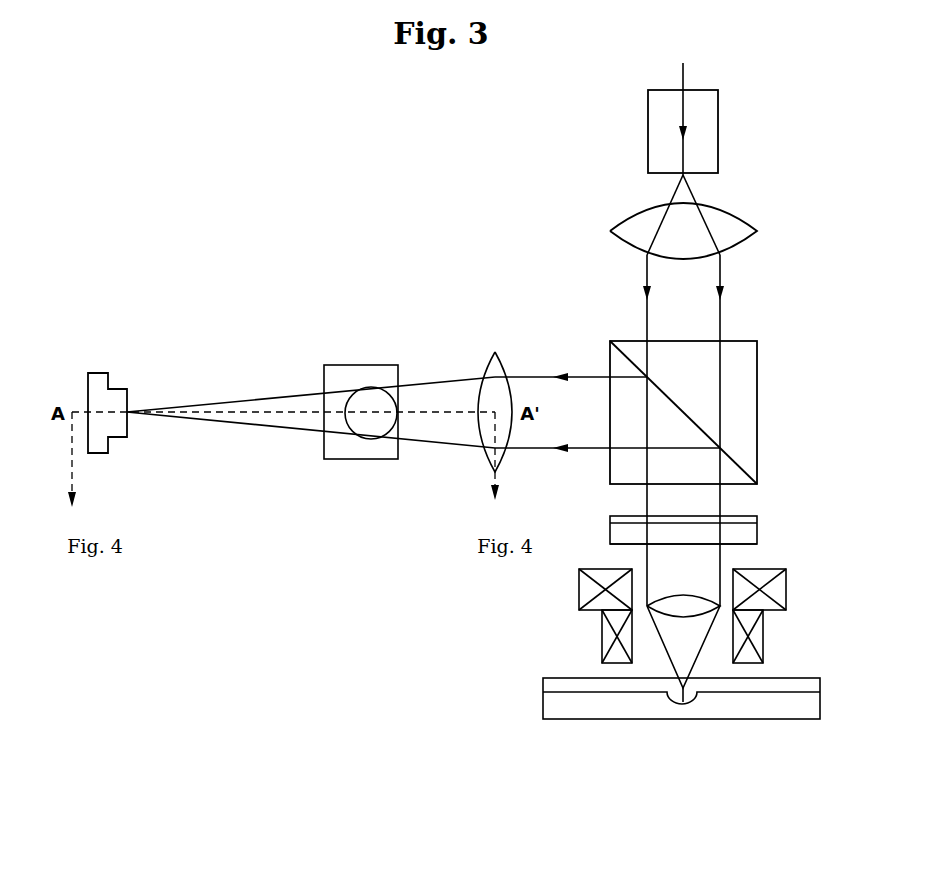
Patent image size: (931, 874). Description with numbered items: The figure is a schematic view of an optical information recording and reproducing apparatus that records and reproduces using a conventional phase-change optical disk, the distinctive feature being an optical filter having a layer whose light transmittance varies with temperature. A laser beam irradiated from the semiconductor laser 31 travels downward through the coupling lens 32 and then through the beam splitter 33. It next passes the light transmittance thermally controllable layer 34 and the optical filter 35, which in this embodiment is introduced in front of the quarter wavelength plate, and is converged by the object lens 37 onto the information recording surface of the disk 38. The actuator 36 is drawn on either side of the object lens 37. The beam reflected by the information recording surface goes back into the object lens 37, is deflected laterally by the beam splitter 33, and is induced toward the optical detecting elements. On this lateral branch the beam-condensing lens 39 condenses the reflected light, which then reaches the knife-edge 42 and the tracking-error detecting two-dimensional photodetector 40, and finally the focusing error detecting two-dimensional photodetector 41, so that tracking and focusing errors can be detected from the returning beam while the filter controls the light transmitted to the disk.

The semiconductor laser 31 is at (718, 118).
The coupling lens 32 is at (757, 231).
The beam splitter 33 is at (757, 385).
The light transmittance thermally controllable layer 34 is at (757, 518).
The optical filter 35 is at (770, 532).
The actuator 36 is at (786, 580).
The object lens 37 is at (680, 618).
The disk 38 is at (822, 712).
The beam-condensing lens 39 is at (492, 352).
The tracking-error detecting 2D-PD 40 is at (371, 412).
The focusing error detecting 2D-PD 41 is at (88, 388).
The knife-edge 42 is at (324, 455).